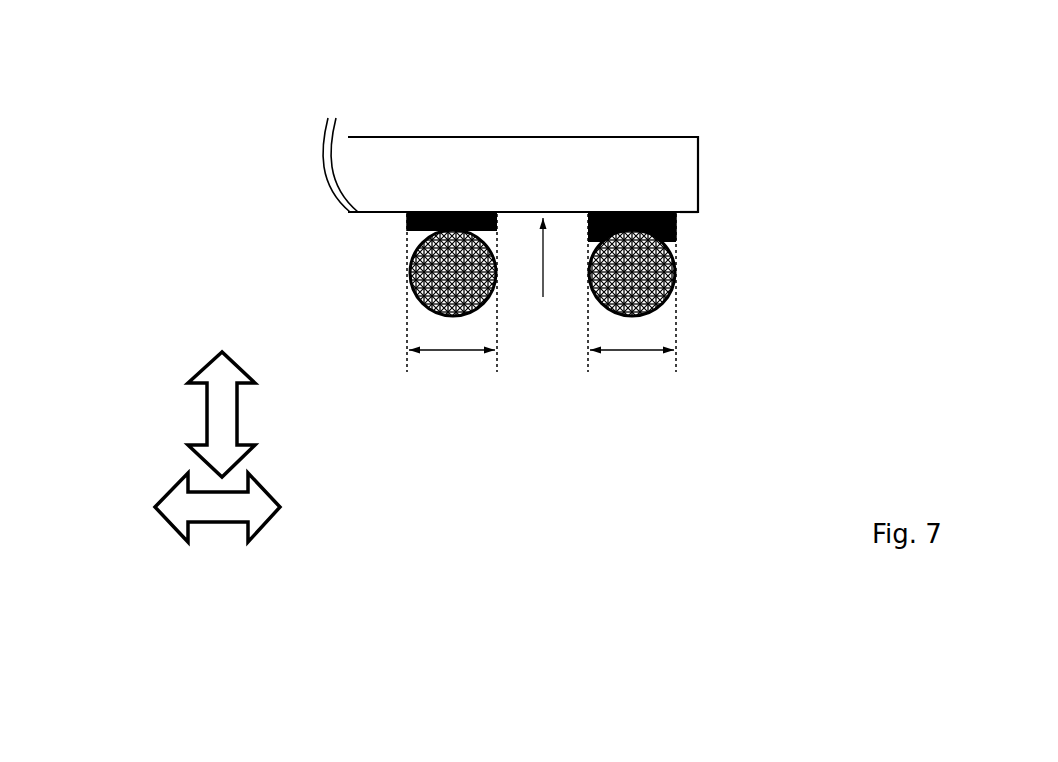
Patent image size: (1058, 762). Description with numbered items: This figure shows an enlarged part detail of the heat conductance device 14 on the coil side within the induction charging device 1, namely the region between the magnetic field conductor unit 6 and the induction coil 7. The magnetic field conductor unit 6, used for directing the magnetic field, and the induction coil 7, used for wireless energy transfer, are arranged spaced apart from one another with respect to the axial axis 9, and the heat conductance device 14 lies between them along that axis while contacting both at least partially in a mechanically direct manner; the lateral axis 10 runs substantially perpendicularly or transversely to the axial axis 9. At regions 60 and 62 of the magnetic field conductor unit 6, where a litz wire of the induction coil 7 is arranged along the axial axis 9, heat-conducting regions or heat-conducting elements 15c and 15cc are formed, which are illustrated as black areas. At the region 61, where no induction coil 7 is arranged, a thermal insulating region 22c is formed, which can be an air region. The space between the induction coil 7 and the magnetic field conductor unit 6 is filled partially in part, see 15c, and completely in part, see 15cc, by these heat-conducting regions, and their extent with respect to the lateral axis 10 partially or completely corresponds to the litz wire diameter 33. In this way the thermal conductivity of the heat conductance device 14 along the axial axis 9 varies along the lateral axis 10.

The induction charging device 1 is at (104, 45).
The magnetic field conductor unit 6 is at (374, 168).
The induction coil 7 is at (406, 270).
The axial axis 9 is at (226, 414).
The lateral axis 10 is at (199, 511).
The heat conductance device on the coil side 14 is at (698, 221).
The heat-conducting region 15c is at (404, 223).
The heat-conducting region 15cc is at (678, 237).
The thermal insulating region 22c is at (538, 270).
The litz wire diameter 33 is at (630, 359).
The region of the magnetic field conductor unit 60 is at (456, 206).
The region of the magnetic field conductor unit 61 is at (545, 206).
The region of the magnetic field conductor unit 62 is at (637, 206).